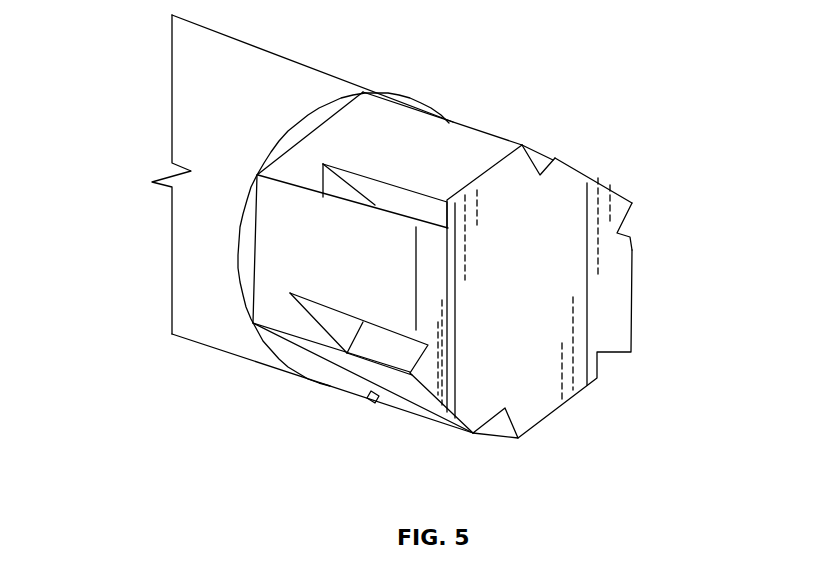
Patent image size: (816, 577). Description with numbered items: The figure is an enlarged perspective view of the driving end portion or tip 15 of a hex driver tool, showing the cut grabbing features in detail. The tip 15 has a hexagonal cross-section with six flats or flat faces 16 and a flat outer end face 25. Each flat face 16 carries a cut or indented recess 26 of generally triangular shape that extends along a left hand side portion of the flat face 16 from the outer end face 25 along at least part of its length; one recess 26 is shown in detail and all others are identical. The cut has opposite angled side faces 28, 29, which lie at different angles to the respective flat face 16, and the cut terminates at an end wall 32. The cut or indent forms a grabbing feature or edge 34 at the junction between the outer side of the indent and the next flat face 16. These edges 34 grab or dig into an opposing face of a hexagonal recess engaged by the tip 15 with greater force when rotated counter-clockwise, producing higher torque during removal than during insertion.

The driving end portion or tip 15 is at (356, 378).
The flat face 16 is at (268, 254).
The flat outer end face 25 is at (527, 310).
The cut or indented recess 26 is at (414, 206).
The angled side face 28 is at (543, 162).
The angled side face 29 is at (545, 161).
The end wall 32 is at (340, 187).
The grabbing feature or edge 34 is at (508, 135).